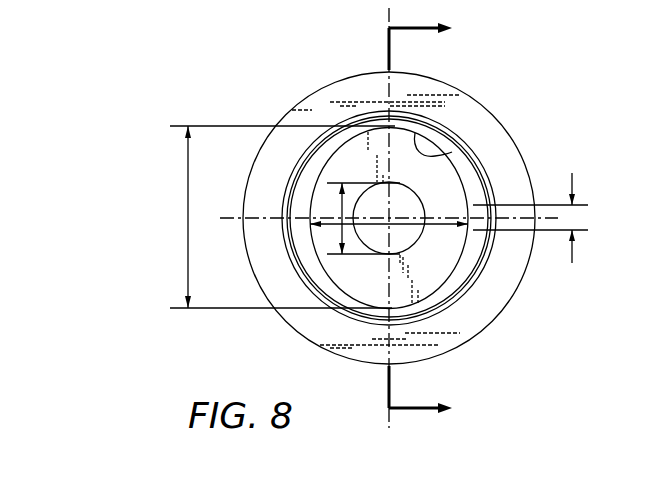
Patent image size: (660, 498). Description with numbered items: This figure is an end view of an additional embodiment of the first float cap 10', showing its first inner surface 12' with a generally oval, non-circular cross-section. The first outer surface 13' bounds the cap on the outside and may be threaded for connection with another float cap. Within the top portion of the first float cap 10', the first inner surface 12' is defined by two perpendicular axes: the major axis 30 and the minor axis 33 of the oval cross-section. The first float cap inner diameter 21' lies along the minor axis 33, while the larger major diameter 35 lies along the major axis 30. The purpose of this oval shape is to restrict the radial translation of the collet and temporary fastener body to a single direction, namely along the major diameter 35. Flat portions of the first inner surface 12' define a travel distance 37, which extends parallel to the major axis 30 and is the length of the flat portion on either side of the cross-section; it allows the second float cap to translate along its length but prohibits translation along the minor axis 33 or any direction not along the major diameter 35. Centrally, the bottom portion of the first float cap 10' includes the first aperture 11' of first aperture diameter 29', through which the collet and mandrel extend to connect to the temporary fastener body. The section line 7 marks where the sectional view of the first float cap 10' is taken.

The first float cap 10' is at (371, 193).
The first aperture 11' is at (466, 251).
The first inner surface 12' is at (420, 221).
The first outer surface 13' is at (354, 218).
The first float cap inner diameter 21' is at (445, 218).
The first aperture diameter 29' is at (298, 212).
The major axis 30 is at (388, 23).
The minor axis 33 is at (232, 220).
The major diameter 35 is at (187, 222).
The travel distance 37 is at (574, 180).
The section line 7- 7 is at (431, 224).